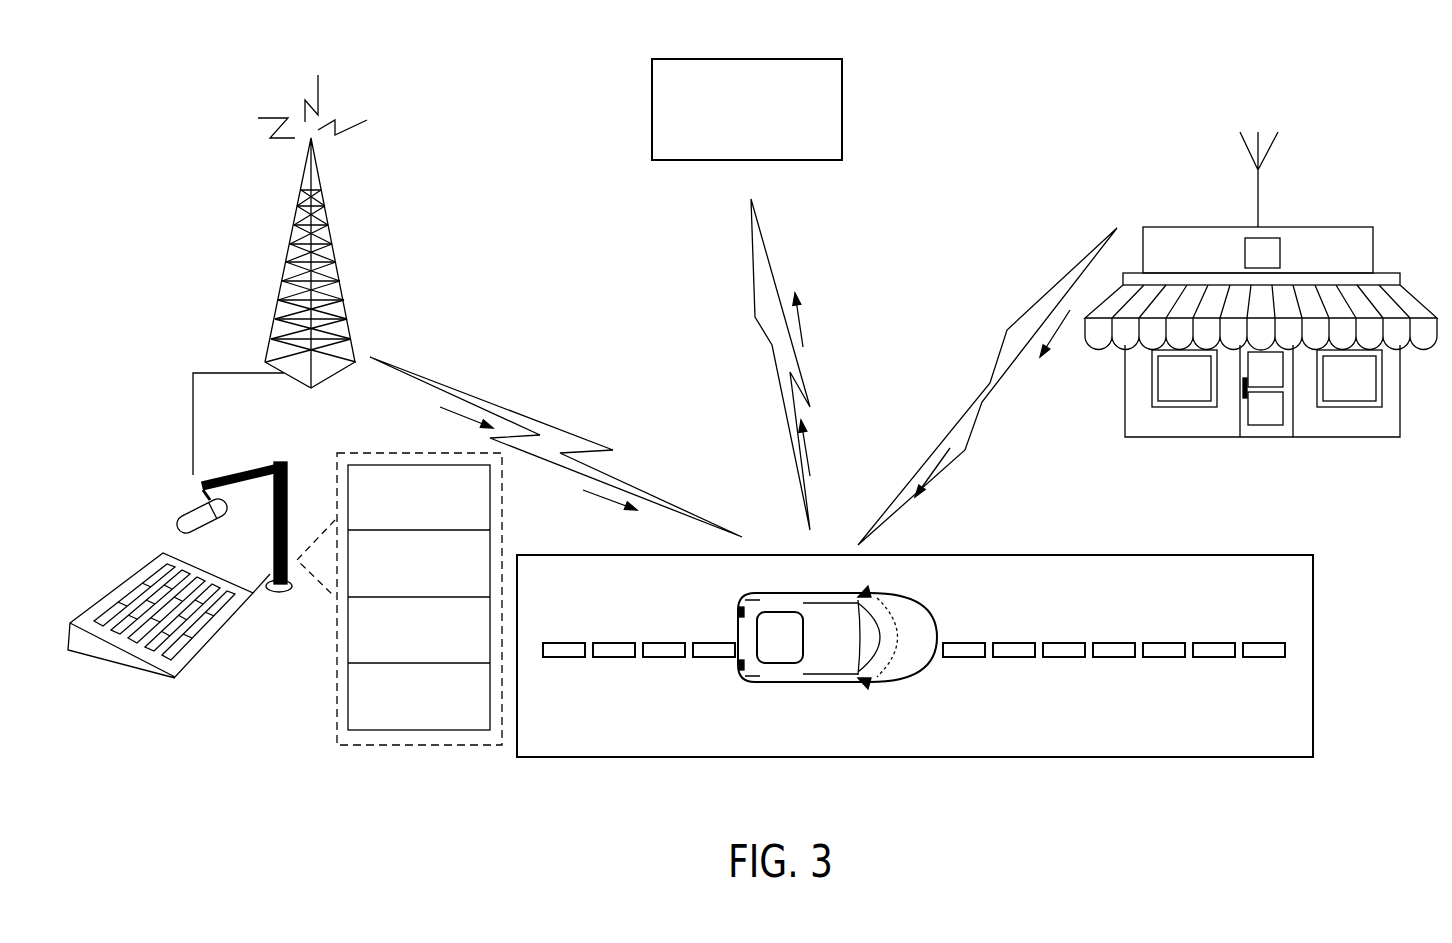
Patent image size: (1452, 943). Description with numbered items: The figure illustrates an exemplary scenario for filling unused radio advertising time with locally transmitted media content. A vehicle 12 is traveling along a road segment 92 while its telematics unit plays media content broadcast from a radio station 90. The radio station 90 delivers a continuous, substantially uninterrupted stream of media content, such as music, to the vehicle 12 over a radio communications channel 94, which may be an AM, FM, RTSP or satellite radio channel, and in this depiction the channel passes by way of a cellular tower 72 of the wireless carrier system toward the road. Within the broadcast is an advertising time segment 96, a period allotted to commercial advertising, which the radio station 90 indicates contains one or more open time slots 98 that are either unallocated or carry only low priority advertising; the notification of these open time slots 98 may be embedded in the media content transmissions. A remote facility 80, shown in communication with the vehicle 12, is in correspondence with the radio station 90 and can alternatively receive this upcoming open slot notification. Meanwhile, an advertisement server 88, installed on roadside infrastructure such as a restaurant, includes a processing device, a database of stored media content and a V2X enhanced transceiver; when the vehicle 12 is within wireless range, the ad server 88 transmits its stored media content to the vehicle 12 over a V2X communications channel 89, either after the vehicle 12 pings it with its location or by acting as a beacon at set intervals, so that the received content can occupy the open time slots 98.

The vehicle 12 is at (833, 640).
The cellular tower 72 is at (352, 240).
The remote facility 80 is at (882, 74).
The advertisement server 88 is at (1280, 255).
The V2X communications channel 89 is at (978, 377).
The radio station 90 is at (125, 540).
The road segment 92 is at (1097, 759).
The radio communications channel 94 is at (558, 437).
The advertising time segment 96 is at (392, 647).
The open time slots 98 is at (372, 613).